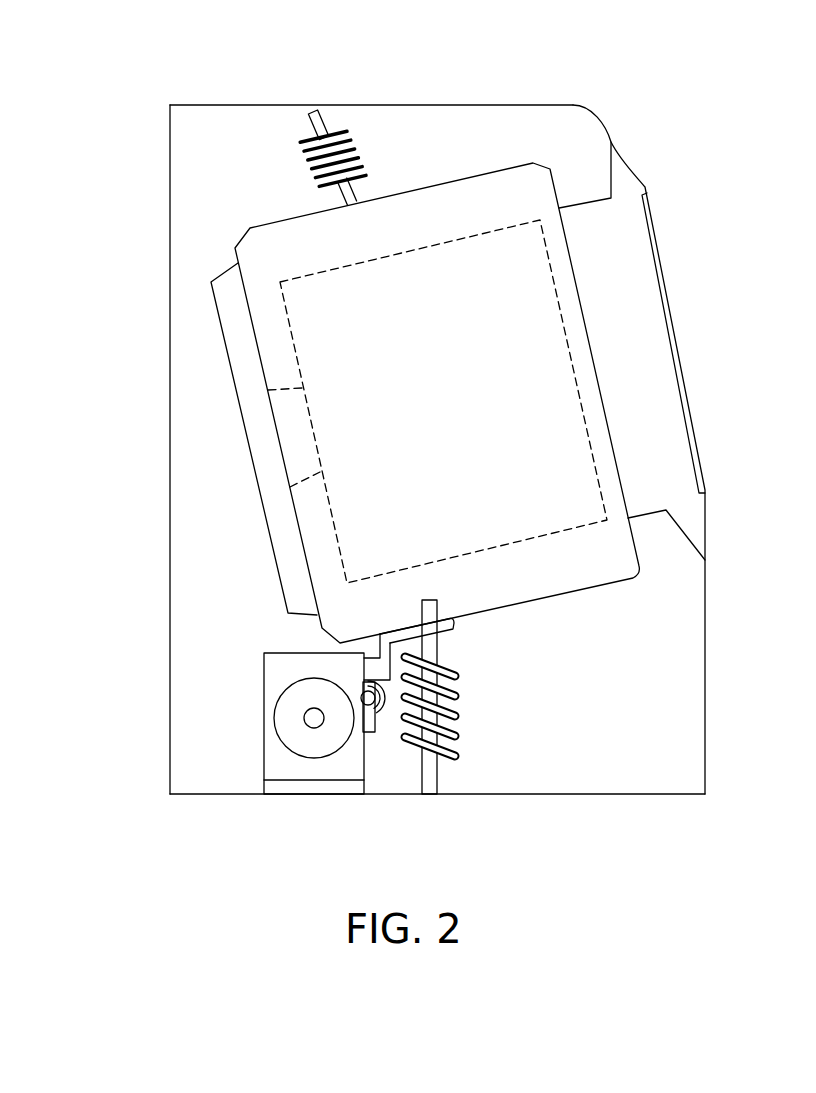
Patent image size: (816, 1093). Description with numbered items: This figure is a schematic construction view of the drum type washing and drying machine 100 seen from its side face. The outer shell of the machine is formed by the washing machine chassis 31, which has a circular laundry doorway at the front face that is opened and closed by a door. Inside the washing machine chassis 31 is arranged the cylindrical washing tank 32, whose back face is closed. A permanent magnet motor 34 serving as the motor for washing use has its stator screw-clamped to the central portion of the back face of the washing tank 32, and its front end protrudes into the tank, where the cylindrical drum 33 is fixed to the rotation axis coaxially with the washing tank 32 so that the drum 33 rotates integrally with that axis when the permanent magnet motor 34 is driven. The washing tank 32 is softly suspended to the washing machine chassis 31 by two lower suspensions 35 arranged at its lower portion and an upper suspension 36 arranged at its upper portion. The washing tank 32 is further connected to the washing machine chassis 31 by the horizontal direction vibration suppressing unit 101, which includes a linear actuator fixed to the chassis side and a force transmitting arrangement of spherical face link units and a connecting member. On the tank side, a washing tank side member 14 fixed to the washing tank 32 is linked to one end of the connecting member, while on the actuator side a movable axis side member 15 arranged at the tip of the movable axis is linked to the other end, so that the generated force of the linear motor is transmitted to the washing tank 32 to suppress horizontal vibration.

The drum type washing and drying machine 100 is at (136, 151).
The horizontal direction vibration suppressing unit 101 is at (218, 733).
The washing machine chassis 31 is at (263, 105).
The washing tank 32 is at (280, 222).
The drum 33 is at (432, 246).
The permanent magnet motor 34 is at (226, 355).
The lower suspension 35 is at (457, 763).
The upper suspension 36 is at (339, 135).
The washing tank side member 14 is at (445, 632).
The movable axis side member 15 is at (340, 763).